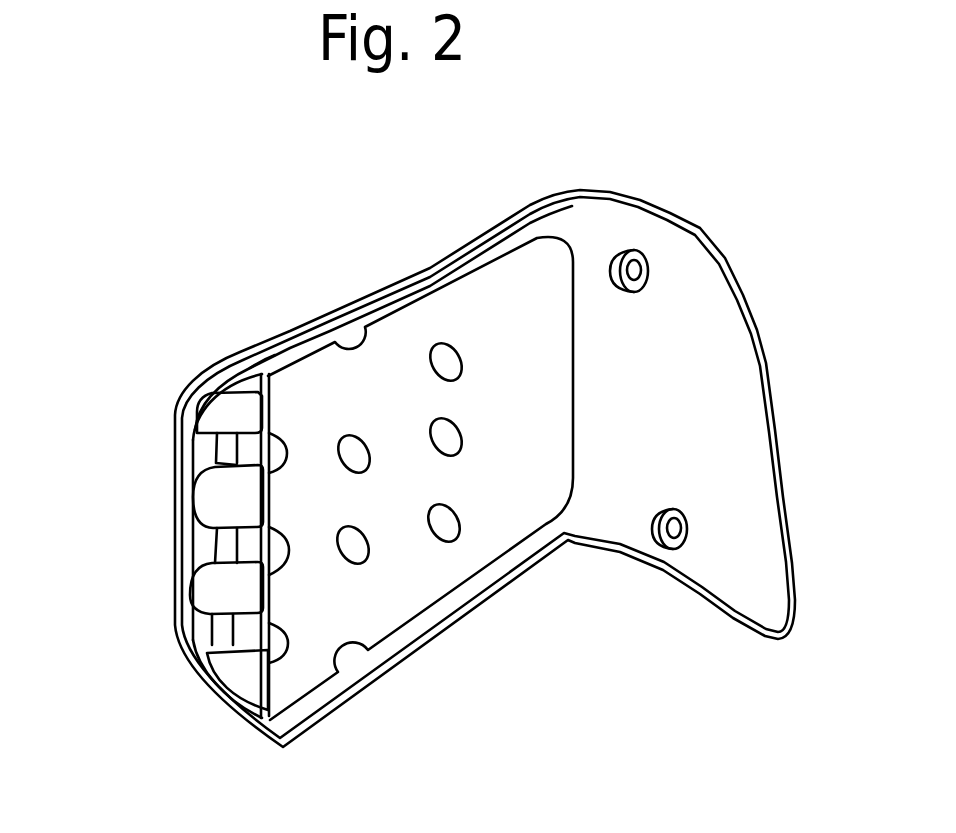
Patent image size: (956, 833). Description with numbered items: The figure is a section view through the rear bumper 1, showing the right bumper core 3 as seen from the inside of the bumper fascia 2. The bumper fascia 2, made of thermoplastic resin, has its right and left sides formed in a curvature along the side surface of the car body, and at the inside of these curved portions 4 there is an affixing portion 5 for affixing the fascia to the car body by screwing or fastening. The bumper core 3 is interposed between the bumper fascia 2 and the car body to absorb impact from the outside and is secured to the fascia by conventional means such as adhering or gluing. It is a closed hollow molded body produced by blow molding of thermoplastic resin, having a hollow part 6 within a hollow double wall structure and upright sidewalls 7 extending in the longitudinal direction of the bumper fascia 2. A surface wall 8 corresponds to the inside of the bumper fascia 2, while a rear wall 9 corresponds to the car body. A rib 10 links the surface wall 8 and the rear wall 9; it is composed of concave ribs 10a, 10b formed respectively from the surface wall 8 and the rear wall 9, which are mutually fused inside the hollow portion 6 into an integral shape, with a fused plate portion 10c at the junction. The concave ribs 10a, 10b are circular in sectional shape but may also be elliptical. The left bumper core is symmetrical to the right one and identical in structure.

The rear bumper 1 is at (291, 240).
The bumper fascia 2 is at (173, 450).
The bumper core 3 is at (360, 296).
The curved portion 4 is at (718, 397).
The affixing portion 5 is at (637, 266).
The hollow part 6 is at (227, 496).
The upright sidewall 7 is at (287, 333).
The surface wall 8 is at (187, 512).
The rear wall 9 is at (480, 303).
The rib 10 is at (202, 540).
The concave rib 10a is at (190, 562).
The concave rib 10b is at (272, 548).
The fused plate portion 10c is at (188, 658).